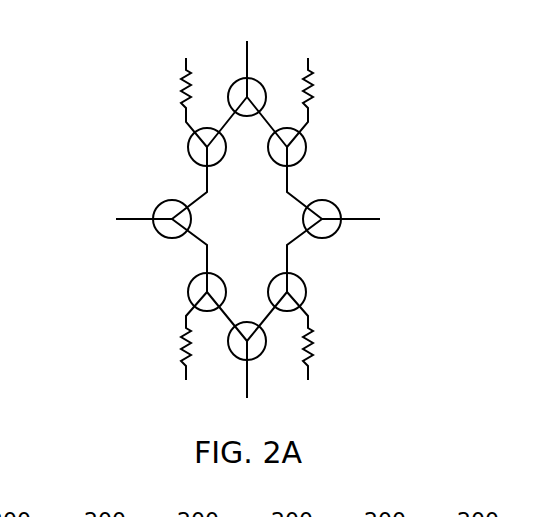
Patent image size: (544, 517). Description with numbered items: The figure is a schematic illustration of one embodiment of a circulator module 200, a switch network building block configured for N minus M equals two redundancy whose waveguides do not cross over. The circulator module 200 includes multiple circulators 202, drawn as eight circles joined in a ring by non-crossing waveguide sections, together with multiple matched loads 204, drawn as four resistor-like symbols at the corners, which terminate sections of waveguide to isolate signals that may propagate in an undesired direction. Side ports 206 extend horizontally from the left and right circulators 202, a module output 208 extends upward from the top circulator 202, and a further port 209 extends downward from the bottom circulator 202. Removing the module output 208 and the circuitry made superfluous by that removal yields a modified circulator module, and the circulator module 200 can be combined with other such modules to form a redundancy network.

The circulator module 200 is at (463, 128).
The circulator 202 is at (235, 82).
The matched load 204 is at (183, 84).
The terminal 206 is at (133, 217).
The module output 208 is at (250, 45).
The bottom terminal 209 is at (246, 378).